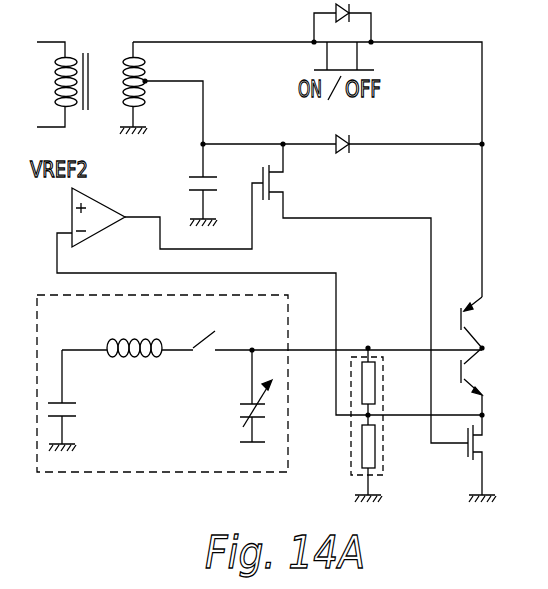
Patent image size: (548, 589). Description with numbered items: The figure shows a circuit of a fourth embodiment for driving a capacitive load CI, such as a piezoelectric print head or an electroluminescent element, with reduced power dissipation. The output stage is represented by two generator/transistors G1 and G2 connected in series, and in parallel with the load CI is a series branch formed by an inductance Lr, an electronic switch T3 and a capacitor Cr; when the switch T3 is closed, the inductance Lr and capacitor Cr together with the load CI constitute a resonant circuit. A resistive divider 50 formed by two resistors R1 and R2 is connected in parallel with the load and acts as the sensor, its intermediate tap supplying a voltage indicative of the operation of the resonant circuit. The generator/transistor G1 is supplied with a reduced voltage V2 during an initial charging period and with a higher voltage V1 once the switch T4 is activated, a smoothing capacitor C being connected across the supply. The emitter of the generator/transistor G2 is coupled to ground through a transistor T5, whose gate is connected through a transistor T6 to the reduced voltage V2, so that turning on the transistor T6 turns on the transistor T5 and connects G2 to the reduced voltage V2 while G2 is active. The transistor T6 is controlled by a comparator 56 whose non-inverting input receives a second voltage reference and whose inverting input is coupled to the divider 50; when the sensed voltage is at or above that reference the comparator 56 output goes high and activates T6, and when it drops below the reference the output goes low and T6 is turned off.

The comparator 56 is at (100, 197).
The voltage divider 50 is at (359, 425).
The resistor R1 is at (387, 381).
The resistor R2 is at (384, 458).
The electronic switch T3 is at (337, 325).
The electronic switch T4 is at (358, 59).
The transistor T5 is at (492, 458).
The transistor T6 is at (296, 293).
The controllable current source G1 is at (489, 322).
The controllable current source G2 is at (489, 381).
The smoothing capacitor C is at (192, 185).
The capacitor Cr is at (79, 400).
The capacitive load CI is at (239, 396).
The inductance Lr is at (127, 329).
The higher voltage V1 is at (307, 149).
The reduced voltage V2 is at (174, 95).